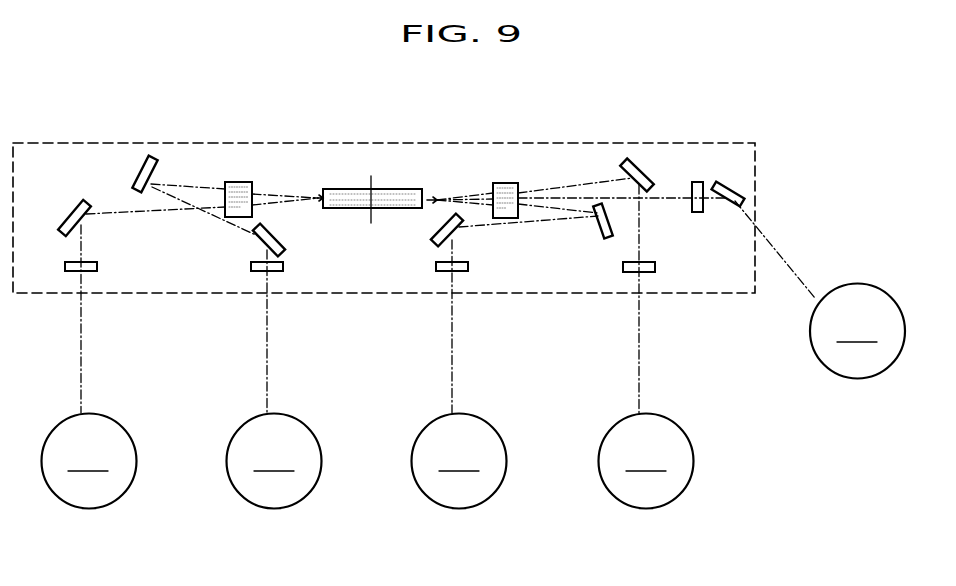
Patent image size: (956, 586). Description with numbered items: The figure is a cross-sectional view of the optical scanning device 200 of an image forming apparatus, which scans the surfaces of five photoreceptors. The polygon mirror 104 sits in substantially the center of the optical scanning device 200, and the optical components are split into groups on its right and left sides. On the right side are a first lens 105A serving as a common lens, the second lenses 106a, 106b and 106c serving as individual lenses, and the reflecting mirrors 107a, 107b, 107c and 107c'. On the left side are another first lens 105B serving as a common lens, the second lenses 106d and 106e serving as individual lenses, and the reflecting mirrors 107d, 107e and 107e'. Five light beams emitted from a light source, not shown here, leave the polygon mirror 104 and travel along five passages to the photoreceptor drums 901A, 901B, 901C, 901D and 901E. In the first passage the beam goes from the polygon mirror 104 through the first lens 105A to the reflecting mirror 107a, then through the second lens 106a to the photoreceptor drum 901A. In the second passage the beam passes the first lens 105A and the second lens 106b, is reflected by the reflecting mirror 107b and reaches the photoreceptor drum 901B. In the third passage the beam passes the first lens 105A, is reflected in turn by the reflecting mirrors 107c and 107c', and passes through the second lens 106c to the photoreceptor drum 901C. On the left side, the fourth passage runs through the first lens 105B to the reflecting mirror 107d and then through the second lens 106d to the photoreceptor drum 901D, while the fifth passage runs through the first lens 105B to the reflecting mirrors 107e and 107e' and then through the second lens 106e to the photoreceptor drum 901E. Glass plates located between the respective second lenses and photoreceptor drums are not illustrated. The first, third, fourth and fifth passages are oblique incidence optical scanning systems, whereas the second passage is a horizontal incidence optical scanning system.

The polygon mirror 104 is at (393, 189).
The first lens 105A is at (505, 183).
The first lens 105B is at (238, 182).
The second lens 106a is at (648, 272).
The second lens 106b is at (698, 182).
The second lens 106c is at (460, 272).
The second lens 106d is at (72, 272).
The second lens 106e is at (258, 272).
The reflecting mirror 107a is at (634, 163).
The reflecting mirror 107b is at (741, 194).
The reflecting mirror 107c is at (567, 235).
The reflecting mirror 107c' is at (410, 244).
The reflecting mirror 107d is at (72, 203).
The reflecting mirror 107e is at (155, 147).
The reflecting mirror 107e' is at (304, 240).
The optical scanning device 200 is at (744, 144).
The photoreceptor drum 901A is at (645, 507).
The photoreceptor drum 901B is at (858, 377).
The photoreceptor drum 901C is at (458, 507).
The photoreceptor drum 901D is at (88, 507).
The photoreceptor drum 901E is at (273, 507).